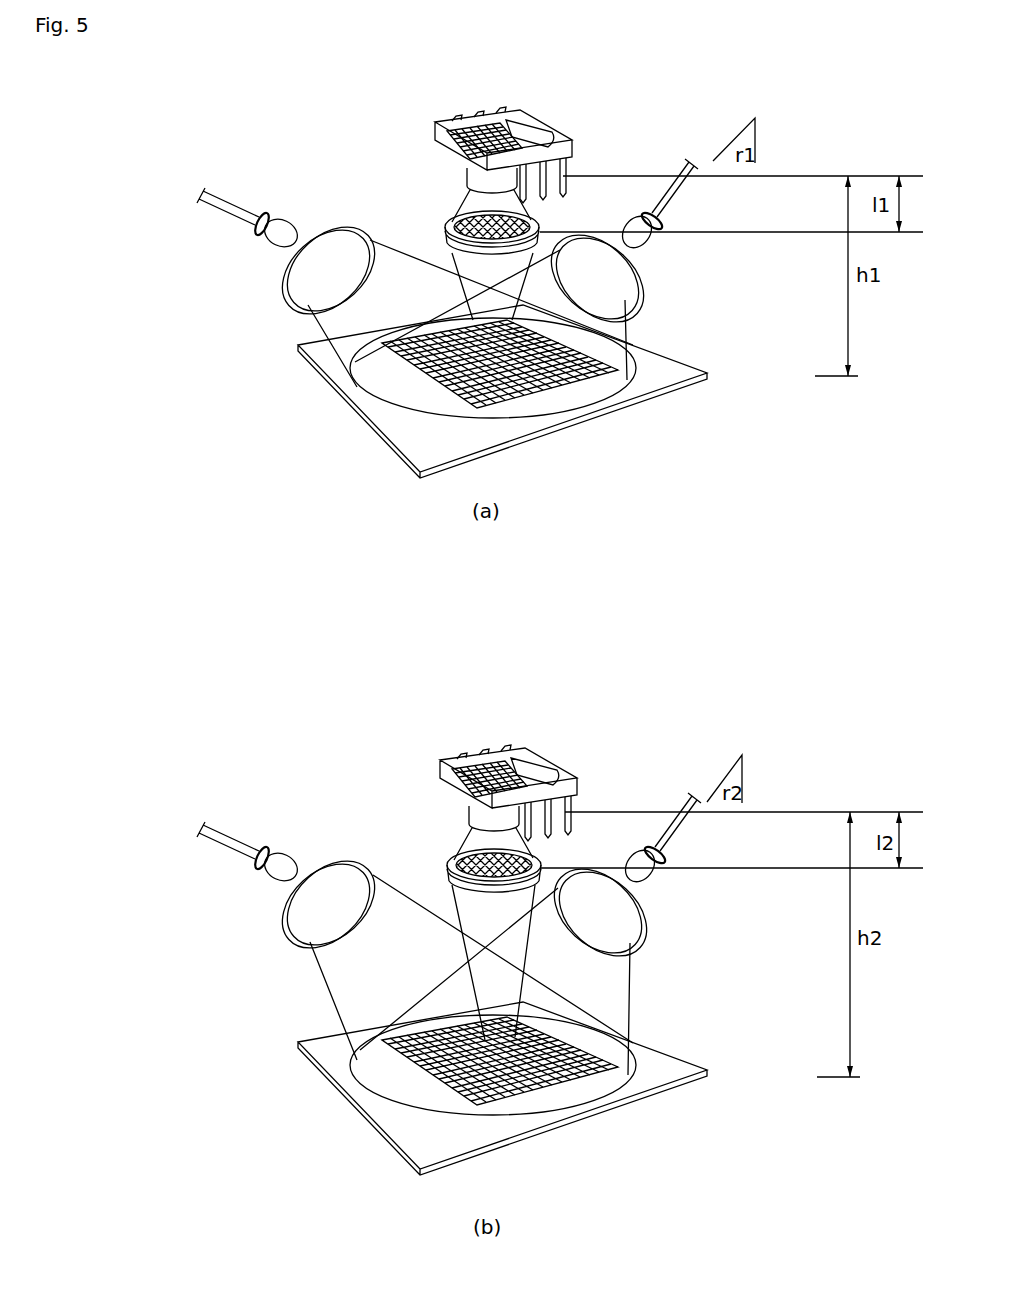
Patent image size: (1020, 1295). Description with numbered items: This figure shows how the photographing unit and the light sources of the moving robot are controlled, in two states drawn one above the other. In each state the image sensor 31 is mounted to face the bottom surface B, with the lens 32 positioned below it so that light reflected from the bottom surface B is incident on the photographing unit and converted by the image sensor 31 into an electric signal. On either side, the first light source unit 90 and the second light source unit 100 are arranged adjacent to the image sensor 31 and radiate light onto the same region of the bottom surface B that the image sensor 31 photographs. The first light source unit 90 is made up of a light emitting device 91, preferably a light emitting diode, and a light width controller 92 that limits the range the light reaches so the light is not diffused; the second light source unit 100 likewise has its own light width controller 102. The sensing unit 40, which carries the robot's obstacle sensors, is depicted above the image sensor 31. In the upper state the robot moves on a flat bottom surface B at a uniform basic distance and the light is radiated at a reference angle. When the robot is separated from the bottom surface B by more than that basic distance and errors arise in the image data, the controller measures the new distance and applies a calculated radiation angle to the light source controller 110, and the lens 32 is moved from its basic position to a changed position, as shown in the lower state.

The image sensor 31 is at (466, 167).
The lens 32 is at (452, 230).
The sensing unit 40 is at (413, 219).
The second light source unit 100 is at (206, 224).
The light source controller 110 is at (277, 238).
The light width controller 102 is at (292, 283).
The first light source unit 90 is at (704, 197).
The light emitting device 91 is at (650, 238).
The light width controller 92 is at (637, 290).
The bottom surface B is at (703, 370).